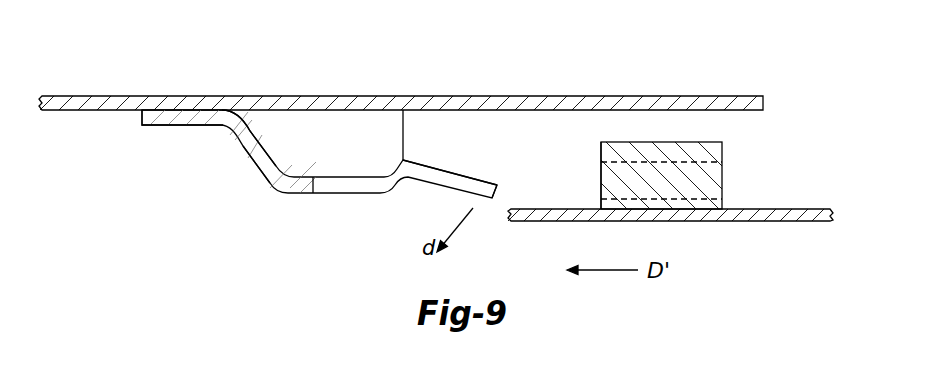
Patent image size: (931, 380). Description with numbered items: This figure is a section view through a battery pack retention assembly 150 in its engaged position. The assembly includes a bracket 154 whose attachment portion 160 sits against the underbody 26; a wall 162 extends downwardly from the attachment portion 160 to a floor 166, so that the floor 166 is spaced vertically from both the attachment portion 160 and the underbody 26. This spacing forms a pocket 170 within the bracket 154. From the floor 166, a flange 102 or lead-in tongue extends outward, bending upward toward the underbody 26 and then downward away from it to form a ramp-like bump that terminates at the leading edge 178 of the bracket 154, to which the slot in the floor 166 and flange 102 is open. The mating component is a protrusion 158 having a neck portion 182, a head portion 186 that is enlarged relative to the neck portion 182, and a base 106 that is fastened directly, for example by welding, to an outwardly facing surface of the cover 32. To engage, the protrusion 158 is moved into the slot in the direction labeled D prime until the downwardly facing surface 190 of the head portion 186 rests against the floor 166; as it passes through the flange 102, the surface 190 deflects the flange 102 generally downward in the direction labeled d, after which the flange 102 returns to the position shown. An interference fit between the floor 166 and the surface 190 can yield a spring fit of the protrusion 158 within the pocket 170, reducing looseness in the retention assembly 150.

The underbody 26 is at (361, 106).
The cover 32 is at (765, 207).
The flange 102 is at (451, 171).
The base 106 is at (703, 200).
The battery pack retention assembly 150 is at (277, 236).
The bracket 154 is at (268, 180).
The protrusion 158 is at (657, 141).
The attachment portion 160 is at (167, 126).
The wall 162 is at (243, 150).
The floor 166 is at (330, 172).
The pocket 170 is at (318, 147).
The leading edge 178 is at (497, 192).
The neck portion 182 is at (602, 193).
The head portion 186 is at (724, 157).
The downwardly facing surface 190 is at (601, 165).